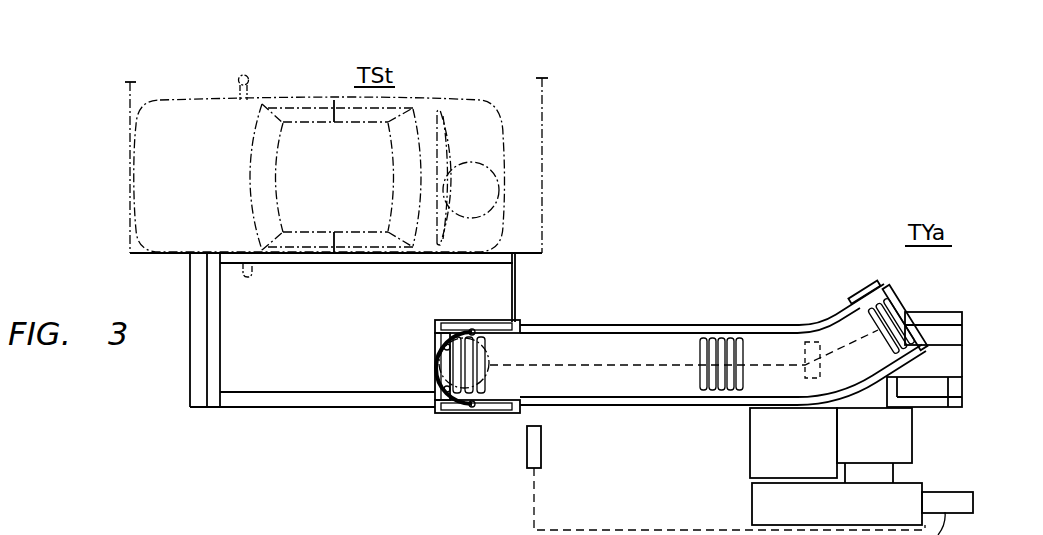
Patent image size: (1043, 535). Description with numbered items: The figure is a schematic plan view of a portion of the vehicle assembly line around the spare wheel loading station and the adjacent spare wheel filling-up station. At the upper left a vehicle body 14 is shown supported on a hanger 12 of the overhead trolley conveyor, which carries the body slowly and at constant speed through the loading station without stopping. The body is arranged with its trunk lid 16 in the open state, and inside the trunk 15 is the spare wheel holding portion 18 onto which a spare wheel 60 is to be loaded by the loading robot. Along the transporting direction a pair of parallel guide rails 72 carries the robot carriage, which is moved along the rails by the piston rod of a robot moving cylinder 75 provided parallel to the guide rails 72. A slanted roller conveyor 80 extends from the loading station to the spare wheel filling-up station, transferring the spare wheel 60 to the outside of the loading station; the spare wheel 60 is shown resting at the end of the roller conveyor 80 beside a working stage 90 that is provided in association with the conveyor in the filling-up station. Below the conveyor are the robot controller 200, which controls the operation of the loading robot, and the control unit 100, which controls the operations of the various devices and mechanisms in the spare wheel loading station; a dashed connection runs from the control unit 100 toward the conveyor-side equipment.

The hanger 12 is at (250, 82).
The vehicle body 14 is at (292, 265).
The trunk 15 is at (480, 228).
The trunk lid 16 is at (450, 140).
The spare wheel holding portion 18 is at (483, 178).
The spare wheel 60 is at (488, 367).
The guide rails 72 is at (918, 400).
The robot moving cylinder 75 is at (947, 372).
The roller conveyor 80 is at (828, 330).
The working stage 90 is at (307, 377).
The control unit 100 is at (757, 498).
The robot controller 200 is at (755, 452).